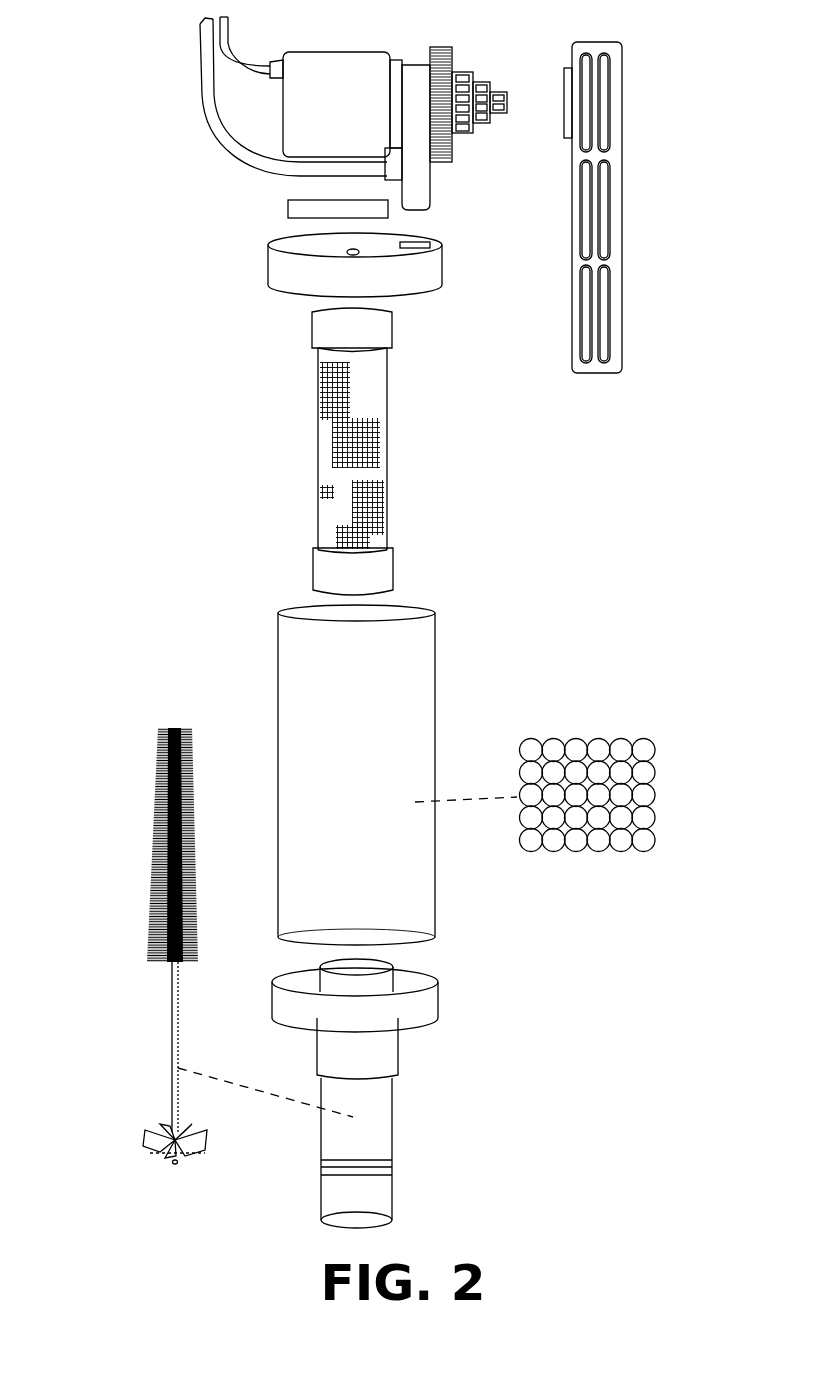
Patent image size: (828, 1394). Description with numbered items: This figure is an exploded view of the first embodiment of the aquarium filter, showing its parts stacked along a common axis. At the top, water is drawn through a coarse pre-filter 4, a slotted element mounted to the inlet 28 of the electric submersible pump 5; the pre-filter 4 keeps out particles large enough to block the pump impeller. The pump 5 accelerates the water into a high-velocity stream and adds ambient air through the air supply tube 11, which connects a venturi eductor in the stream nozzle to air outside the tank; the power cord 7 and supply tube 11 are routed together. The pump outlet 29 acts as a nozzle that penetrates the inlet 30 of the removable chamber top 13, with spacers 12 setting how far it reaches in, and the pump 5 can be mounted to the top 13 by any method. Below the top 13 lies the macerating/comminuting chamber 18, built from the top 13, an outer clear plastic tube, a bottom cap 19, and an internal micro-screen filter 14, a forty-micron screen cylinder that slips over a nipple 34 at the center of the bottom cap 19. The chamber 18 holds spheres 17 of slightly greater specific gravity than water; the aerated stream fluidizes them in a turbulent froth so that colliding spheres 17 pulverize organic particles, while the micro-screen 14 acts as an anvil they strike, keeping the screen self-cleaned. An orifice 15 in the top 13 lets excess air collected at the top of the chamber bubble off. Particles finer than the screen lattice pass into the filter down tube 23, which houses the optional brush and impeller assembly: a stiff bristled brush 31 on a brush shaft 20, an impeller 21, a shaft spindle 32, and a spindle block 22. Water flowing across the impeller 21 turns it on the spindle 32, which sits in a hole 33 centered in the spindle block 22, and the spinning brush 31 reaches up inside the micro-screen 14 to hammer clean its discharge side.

The coarse pre-filter 4 is at (622, 182).
The electric submersible pump 5 is at (283, 92).
The power cord 7 is at (232, 44).
The air supply tube 11 is at (200, 130).
The spacers 12 is at (288, 208).
The chamber top 13 is at (268, 260).
The micro-screen filter 14 is at (318, 432).
The orifice 15 is at (360, 254).
The spheres 17 is at (595, 739).
The macerating/comminuting chamber 18 is at (278, 657).
The bottom cap 19 is at (438, 1000).
The brush shaft 20 is at (172, 1033).
The impeller 21 is at (145, 1142).
The spindle block 22 is at (365, 1176).
The filter down tube 23 is at (395, 1100).
The inlet 28 is at (470, 73).
The pump outlet 29 is at (430, 186).
The inlet 30 is at (430, 245).
The stiff bristled brush 31 is at (158, 848).
The shaft spindle 32 is at (175, 1164).
The hole 33 is at (355, 1164).
The nipple 34 is at (395, 965).